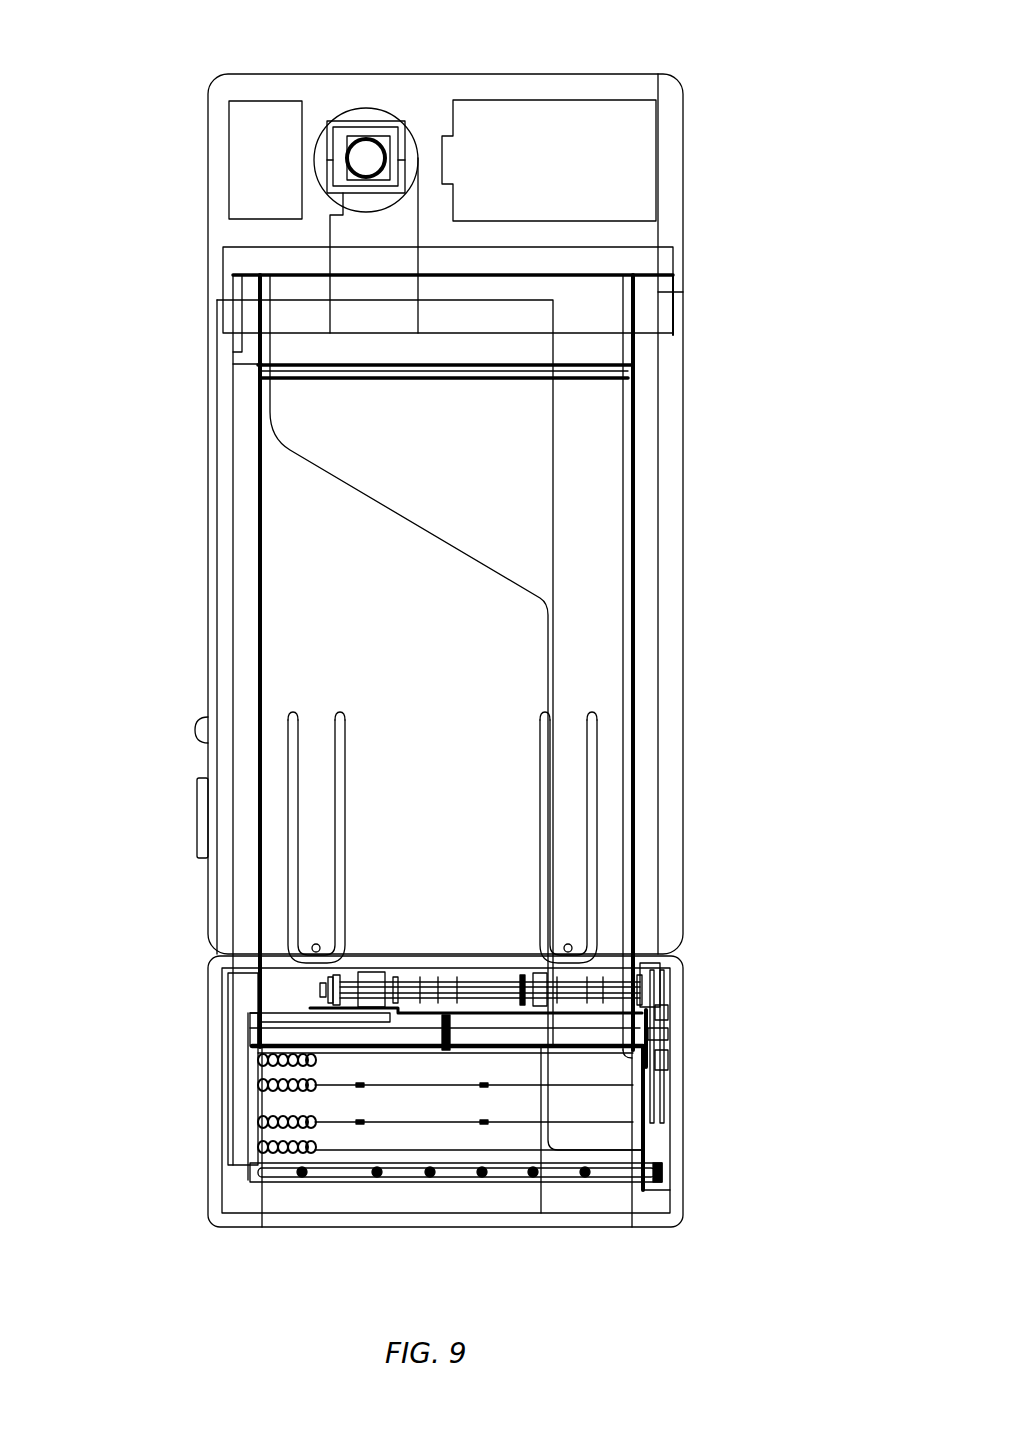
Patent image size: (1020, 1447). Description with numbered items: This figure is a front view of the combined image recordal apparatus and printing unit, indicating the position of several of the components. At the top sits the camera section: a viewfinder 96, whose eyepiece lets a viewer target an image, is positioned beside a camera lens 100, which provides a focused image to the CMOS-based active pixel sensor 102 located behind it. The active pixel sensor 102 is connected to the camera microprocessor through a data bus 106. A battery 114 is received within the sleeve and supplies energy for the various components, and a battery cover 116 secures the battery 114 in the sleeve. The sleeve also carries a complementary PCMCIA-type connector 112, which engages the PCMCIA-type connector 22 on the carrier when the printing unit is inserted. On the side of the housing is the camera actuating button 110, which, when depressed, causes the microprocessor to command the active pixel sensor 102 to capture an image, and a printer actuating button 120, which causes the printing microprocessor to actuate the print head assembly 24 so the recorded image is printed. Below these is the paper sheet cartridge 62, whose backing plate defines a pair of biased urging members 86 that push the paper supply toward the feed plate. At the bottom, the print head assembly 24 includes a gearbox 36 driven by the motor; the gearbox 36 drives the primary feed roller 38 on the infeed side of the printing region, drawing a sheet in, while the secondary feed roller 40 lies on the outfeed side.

The PCMCIA-type connector 22 is at (630, 353).
The print head assembly 24 is at (335, 1150).
The gearbox 36 is at (667, 1033).
The primary feed roller 38 is at (607, 983).
The secondary feed roller 40 is at (440, 1168).
The paper sheet cartridge 62 is at (520, 668).
The urging members 86 is at (570, 815).
The viewfinder 96 is at (248, 157).
The camera lens 100 is at (362, 150).
The active pixel sensor 102 is at (378, 138).
The data bus 106 is at (358, 242).
The camera actuating button 110 is at (200, 808).
The complementary PCMCIA-type connector 112 is at (645, 323).
The battery 114 is at (555, 128).
The battery cover 116 is at (670, 168).
The printer actuating button 120 is at (200, 727).